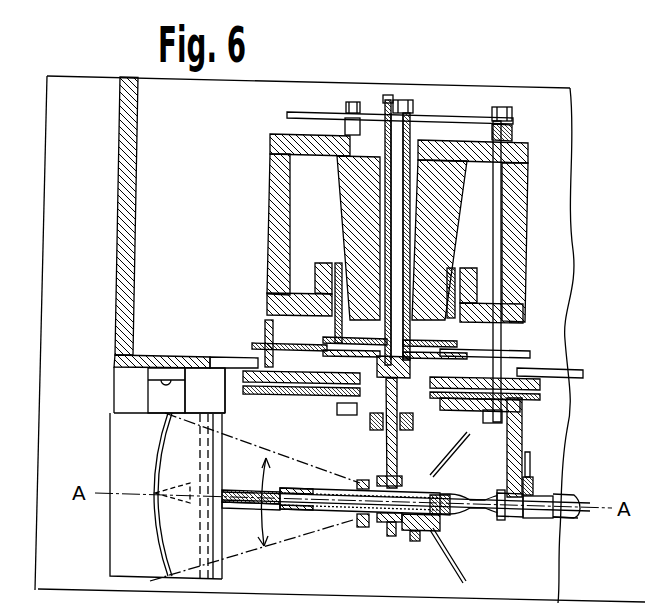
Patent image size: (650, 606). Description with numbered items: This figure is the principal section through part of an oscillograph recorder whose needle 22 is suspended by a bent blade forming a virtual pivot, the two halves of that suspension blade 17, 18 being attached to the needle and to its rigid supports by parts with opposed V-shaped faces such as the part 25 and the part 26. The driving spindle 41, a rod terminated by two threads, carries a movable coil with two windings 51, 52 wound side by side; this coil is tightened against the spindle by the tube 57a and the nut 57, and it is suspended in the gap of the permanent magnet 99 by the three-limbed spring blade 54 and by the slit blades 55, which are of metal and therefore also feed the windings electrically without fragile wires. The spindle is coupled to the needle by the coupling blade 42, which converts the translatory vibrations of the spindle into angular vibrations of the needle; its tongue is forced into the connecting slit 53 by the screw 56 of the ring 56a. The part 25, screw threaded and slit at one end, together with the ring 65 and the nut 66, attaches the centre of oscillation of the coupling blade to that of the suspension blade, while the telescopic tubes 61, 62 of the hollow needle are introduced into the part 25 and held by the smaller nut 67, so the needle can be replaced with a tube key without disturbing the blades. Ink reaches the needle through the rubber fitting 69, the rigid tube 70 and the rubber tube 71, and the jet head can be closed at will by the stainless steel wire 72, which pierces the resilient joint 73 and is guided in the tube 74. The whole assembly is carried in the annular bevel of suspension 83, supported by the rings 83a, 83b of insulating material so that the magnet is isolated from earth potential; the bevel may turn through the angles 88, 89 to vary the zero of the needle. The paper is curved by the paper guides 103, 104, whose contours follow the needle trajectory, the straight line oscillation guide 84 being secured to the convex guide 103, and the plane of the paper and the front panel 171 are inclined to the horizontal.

The front panel 171 is at (121, 260).
The spring blade 54 is at (311, 113).
The nut 57 is at (386, 112).
The driving spindle 41 is at (405, 141).
The tube 57a is at (411, 219).
The permanent magnet 99 is at (523, 226).
The winding 51 is at (338, 262).
The winding 52 is at (323, 318).
The slit blade 55 is at (326, 351).
The coupling blade 42 is at (393, 445).
The ring 83a is at (247, 370).
The ring 83b is at (262, 398).
The annular bevel of suspension 83 is at (528, 399).
The screw 56 is at (354, 426).
The connecting slit 53 is at (380, 431).
The ring 56a is at (413, 426).
The paper guide 104 is at (166, 496).
The convex paper guide 103 is at (178, 495).
The oscillation guide 84 is at (219, 456).
The angle 88 is at (274, 502).
The angle 89 is at (271, 528).
The telescopic tube 61 is at (319, 492).
The stainless steel wire 72 is at (248, 492).
The telescopic tube 62 is at (236, 510).
The needle 22 is at (298, 513).
The nut 67 is at (359, 480).
The nut 66 is at (361, 529).
The ring 65 is at (391, 537).
The V-shaped part 26 is at (418, 536).
The rubber fitting 69 is at (471, 496).
The part 25 is at (446, 516).
The rigid tube 70 is at (524, 521).
The tube 74 is at (570, 521).
The resilient joint 73 is at (553, 493).
The rubber tube 71 is at (531, 460).
The suspension blade 17 is at (453, 444).
The suspension blade 18 is at (463, 578).